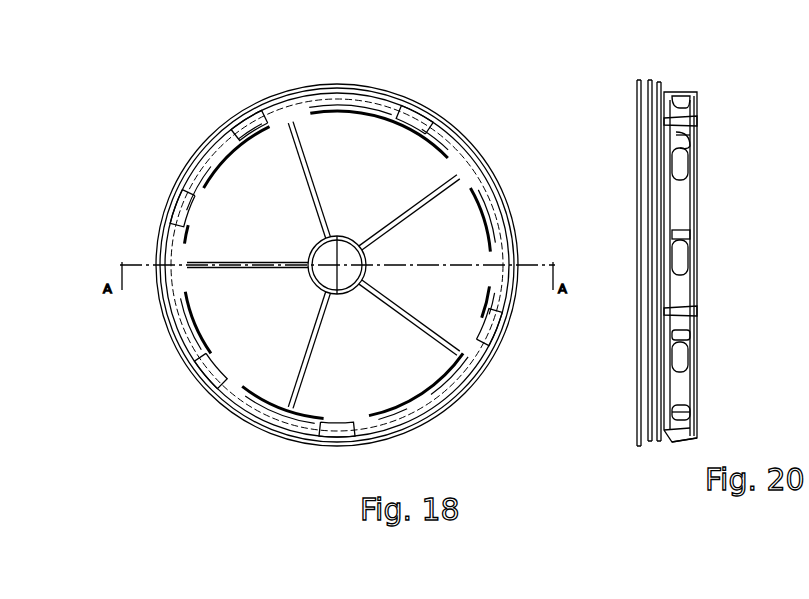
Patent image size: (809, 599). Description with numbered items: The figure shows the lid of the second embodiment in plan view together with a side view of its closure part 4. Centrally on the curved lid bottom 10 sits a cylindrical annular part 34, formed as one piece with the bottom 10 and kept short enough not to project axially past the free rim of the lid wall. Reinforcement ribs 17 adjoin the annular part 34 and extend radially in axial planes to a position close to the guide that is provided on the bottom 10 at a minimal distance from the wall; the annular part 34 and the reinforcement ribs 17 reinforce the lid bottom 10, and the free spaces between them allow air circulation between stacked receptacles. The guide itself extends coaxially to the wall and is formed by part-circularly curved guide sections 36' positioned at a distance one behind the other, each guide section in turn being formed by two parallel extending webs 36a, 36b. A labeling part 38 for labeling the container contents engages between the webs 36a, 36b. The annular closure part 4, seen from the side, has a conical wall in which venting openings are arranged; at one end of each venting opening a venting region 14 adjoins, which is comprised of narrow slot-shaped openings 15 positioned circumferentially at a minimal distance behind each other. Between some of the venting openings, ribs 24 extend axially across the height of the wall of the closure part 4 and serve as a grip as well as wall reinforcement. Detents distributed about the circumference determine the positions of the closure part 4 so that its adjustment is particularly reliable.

In FIG. 18, the guide sections 36' is at (338, 264).
In FIG. 18, the web 36a is at (258, 128).
In FIG. 18, the web 36b is at (341, 116).
In FIG. 18, the labeling part 38 is at (328, 432).
In FIG. 18, the annular part 34 is at (343, 226).
In FIG. 18, the reinforcement ribs 17 is at (176, 302).
In FIG. 18, the bottom 10 is at (245, 325).
In FIG. 20, the closure part 4 is at (685, 388).
In FIG. 20, the ribs 24 is at (689, 144).
In FIG. 20, the slot-shaped openings 15 is at (690, 240).
In FIG. 20, the venting region 14 is at (688, 331).